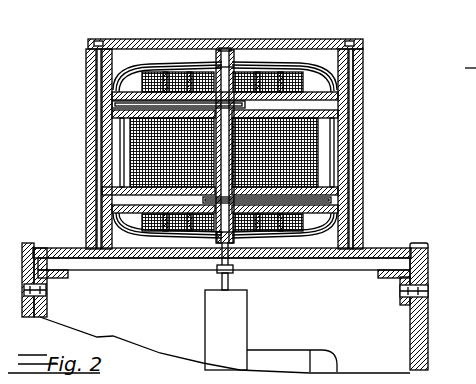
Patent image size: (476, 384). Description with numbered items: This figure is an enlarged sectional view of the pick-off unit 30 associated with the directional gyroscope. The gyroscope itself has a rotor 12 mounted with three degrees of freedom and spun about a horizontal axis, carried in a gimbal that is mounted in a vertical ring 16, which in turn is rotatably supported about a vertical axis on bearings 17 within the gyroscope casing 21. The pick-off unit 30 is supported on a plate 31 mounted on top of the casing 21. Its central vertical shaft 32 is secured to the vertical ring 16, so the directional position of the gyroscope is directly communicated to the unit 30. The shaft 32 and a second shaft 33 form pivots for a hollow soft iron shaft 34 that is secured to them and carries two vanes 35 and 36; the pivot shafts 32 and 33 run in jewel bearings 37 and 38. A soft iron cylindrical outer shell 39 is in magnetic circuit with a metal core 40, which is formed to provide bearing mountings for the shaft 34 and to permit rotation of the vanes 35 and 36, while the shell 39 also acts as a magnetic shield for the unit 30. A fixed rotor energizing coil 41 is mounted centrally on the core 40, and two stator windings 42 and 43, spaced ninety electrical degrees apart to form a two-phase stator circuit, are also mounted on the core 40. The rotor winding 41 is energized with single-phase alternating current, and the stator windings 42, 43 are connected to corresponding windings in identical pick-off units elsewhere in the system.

The rotor 12 is at (278, 356).
The vertical ring 16 is at (205, 332).
The bearings 17 is at (209, 275).
The gyroscope casing 21 is at (415, 334).
The gyroscope bearing pick-off unit 30 is at (78, 186).
The plate 31 is at (383, 262).
The central vertical shaft 32 is at (230, 250).
The second shaft 33 is at (245, 78).
The hollow soft iron shaft 34 is at (239, 131).
The vane 35 is at (118, 106).
The vane 36 is at (345, 216).
The jewel bearing 37 is at (235, 75).
The jewel bearing 38 is at (220, 250).
The soft iron cylindrical outer shell 39 is at (366, 58).
The metal core 40 is at (345, 112).
The rotor energizing coil 41 is at (312, 162).
The stator winding 42 is at (157, 72).
The stator winding 43 is at (120, 72).